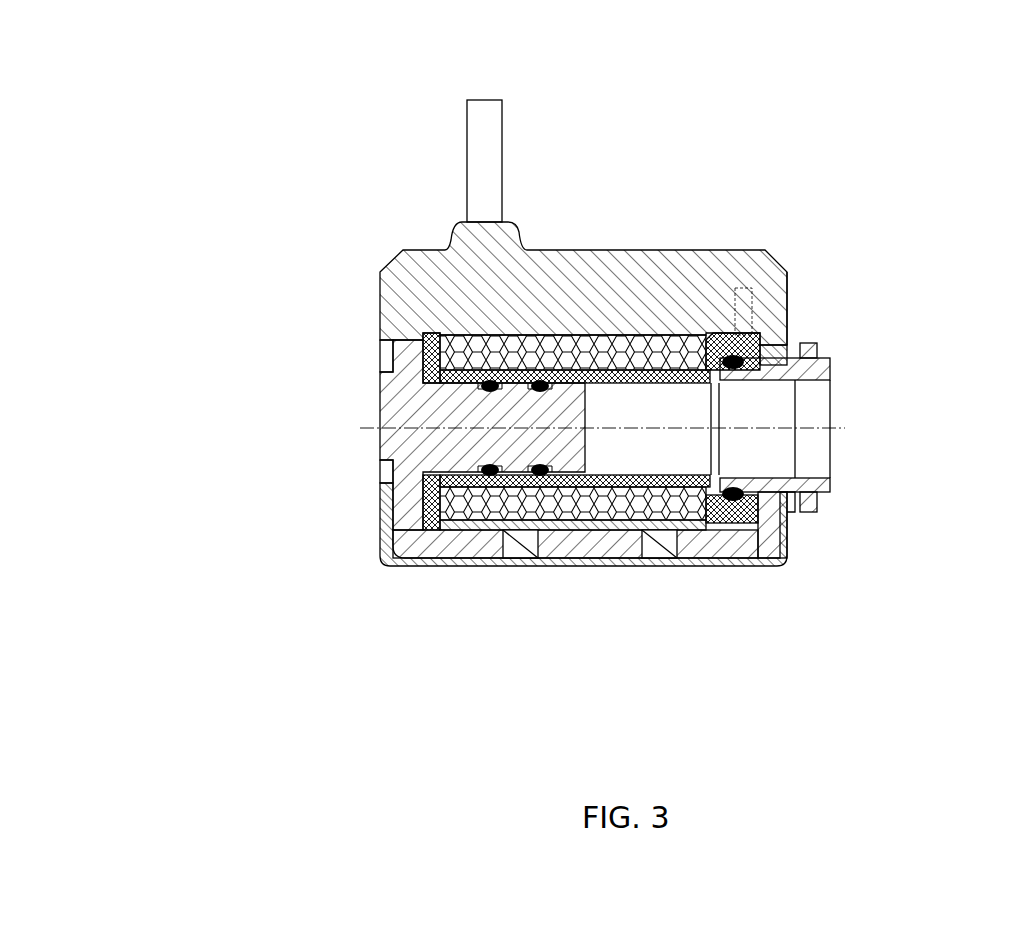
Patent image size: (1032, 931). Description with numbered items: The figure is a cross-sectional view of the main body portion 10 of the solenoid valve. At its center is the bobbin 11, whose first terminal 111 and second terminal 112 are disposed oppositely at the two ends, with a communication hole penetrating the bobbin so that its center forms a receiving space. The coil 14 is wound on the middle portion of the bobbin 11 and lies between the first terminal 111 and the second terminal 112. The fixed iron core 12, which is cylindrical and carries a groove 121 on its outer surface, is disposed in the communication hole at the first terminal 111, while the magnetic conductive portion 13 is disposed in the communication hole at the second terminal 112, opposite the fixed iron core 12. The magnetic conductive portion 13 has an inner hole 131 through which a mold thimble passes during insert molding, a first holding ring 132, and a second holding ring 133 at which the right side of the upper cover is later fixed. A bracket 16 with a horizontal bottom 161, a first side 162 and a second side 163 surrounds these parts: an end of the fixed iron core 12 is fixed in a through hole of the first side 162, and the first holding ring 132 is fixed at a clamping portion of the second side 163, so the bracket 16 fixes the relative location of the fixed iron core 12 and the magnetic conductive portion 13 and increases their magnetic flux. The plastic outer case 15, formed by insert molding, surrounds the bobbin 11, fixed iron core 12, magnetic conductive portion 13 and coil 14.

The main body portion 10 is at (120, 71).
The bobbin 11 is at (722, 335).
The first terminal 111 is at (428, 322).
The second terminal 112 is at (742, 335).
The fixed iron core 12 is at (385, 503).
The groove 121 is at (557, 335).
The magnetic conductive portion 13 is at (812, 510).
The inner hole 131 is at (767, 437).
The first holding ring 132 is at (788, 335).
The second holding ring 133 is at (793, 516).
The coil 14 is at (573, 567).
The outer case 15 is at (478, 287).
The bracket 16 is at (548, 573).
The horizontal bottom 161 is at (635, 567).
The first side 162 is at (395, 372).
The second side 163 is at (772, 567).